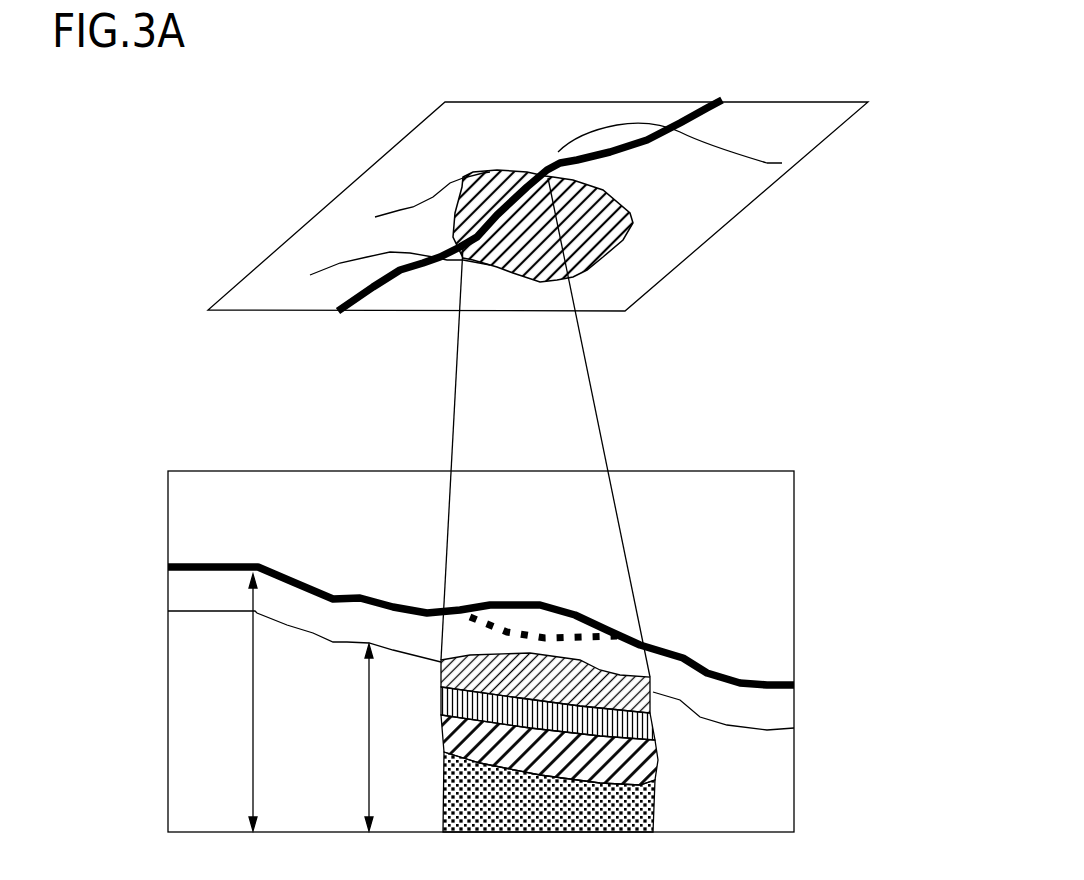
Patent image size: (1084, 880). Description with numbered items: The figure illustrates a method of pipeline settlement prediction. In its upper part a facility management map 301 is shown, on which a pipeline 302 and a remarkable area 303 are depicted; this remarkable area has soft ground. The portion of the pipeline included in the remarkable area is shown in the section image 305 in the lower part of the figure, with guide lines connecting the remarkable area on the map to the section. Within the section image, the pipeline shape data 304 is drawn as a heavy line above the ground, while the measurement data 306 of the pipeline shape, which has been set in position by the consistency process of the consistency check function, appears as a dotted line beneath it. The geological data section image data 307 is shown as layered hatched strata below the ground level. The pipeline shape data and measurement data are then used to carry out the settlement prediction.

The facility management map 301 is at (362, 175).
The pipeline 302 is at (617, 145).
The remarkable area 303 is at (627, 227).
The pipeline shape data 304 is at (670, 645).
The section image 305 is at (210, 482).
The measurement data 306 is at (518, 630).
The geological data section image data 307 is at (657, 807).